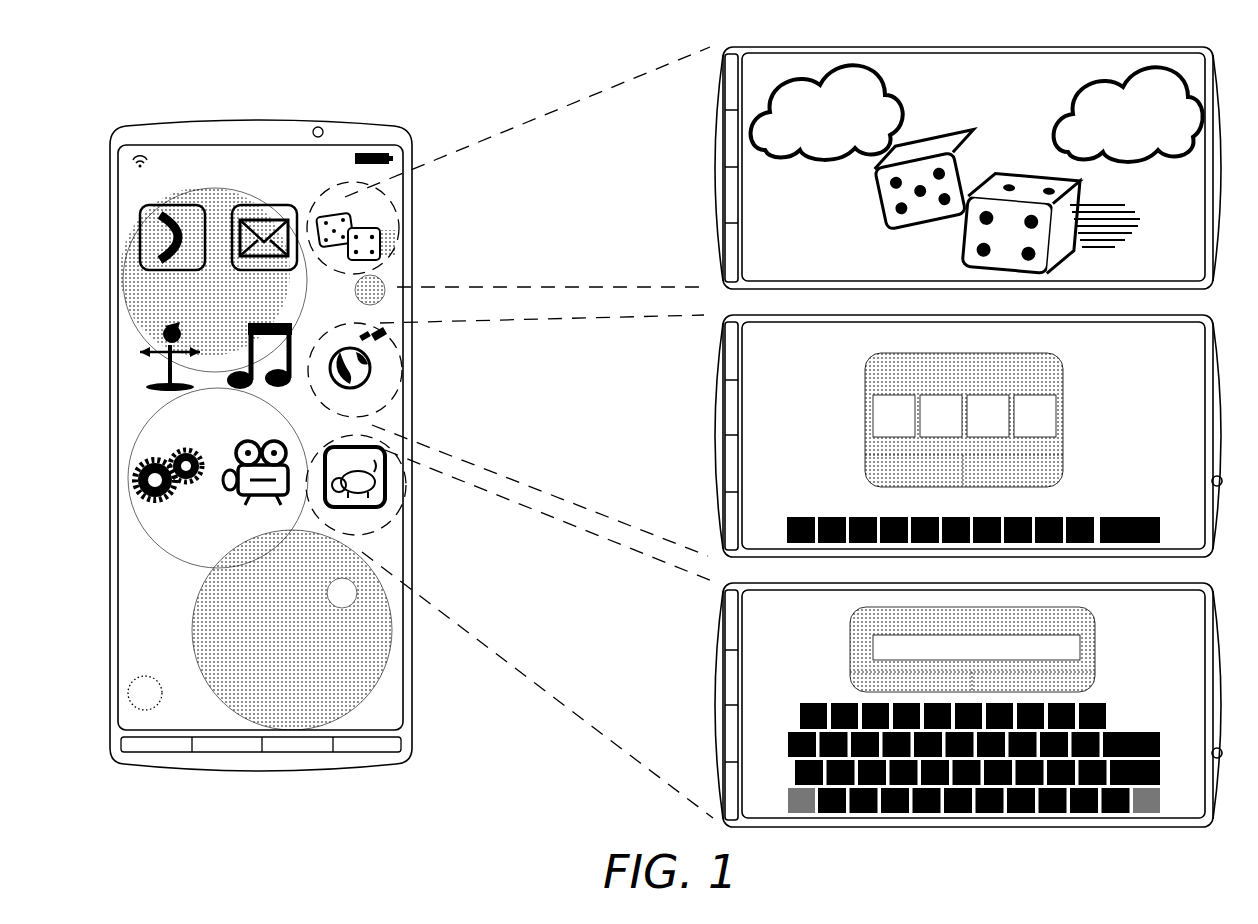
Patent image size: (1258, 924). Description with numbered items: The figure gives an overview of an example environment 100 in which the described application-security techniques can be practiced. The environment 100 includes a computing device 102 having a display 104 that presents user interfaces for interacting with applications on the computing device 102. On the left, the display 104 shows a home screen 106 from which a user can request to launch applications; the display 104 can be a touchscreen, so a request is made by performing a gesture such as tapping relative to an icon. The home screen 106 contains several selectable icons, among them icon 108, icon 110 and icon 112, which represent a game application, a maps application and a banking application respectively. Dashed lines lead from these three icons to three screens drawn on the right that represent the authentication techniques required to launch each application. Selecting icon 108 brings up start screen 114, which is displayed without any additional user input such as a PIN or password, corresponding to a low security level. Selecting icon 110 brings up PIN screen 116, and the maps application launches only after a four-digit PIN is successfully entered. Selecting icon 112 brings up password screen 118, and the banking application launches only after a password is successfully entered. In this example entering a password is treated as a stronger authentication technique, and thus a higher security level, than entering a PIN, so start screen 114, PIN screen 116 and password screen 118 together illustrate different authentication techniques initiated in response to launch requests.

The environment 100 is at (97, 77).
The computing device 102 is at (110, 365).
The display 104 is at (128, 580).
The home screen 106 is at (308, 441).
The icon 108 is at (385, 237).
The icon 110 is at (383, 372).
The icon 112 is at (392, 484).
The start screen 114 is at (808, 265).
The PIN screen 116 is at (808, 445).
The password screen 118 is at (808, 635).